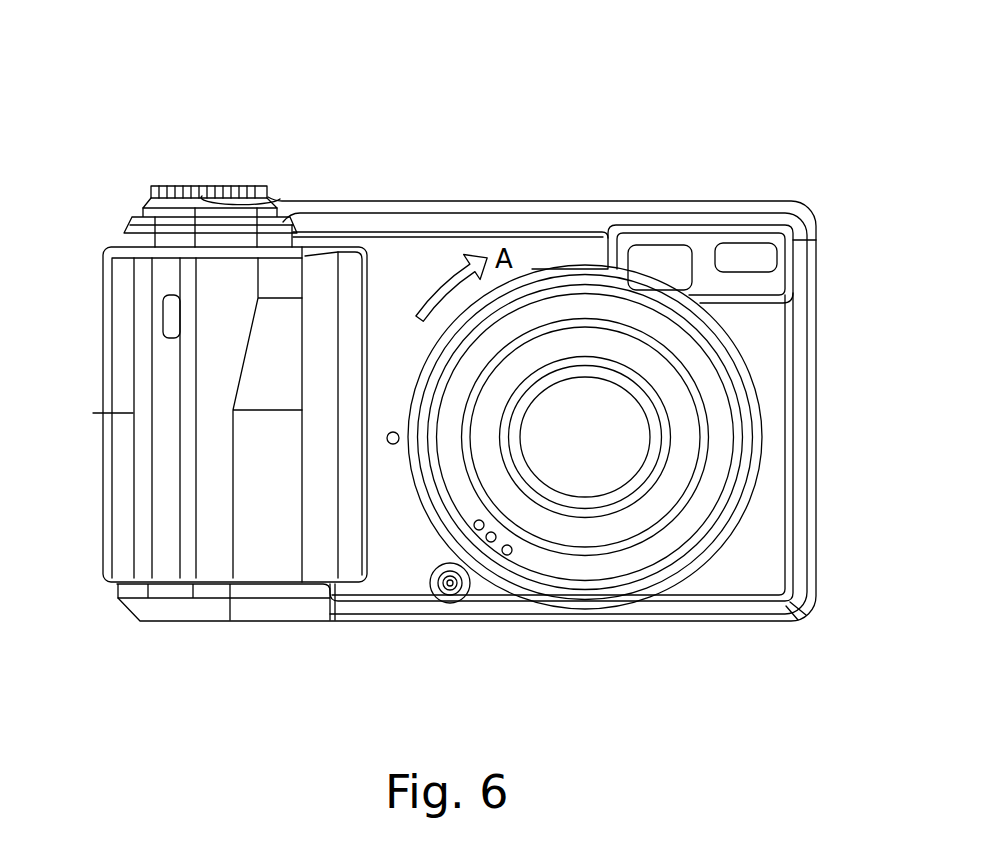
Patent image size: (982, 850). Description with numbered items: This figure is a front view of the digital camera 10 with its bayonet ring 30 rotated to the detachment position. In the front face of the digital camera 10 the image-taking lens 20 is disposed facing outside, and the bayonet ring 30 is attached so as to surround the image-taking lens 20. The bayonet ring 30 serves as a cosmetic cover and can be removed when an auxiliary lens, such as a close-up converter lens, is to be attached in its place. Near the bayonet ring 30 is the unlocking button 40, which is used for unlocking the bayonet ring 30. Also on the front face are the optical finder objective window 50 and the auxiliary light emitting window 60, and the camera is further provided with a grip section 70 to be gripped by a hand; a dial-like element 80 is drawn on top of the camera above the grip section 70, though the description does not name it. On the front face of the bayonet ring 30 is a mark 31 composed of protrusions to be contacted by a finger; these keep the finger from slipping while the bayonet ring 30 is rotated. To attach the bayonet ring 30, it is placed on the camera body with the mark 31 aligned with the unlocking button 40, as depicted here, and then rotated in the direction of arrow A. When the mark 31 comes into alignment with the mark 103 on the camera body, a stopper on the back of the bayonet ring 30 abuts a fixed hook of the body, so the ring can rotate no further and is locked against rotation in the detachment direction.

The digital camera 10 is at (606, 106).
The image-taking lens 20 is at (598, 458).
The bayonet ring 30 is at (712, 388).
The mark 31 is at (473, 542).
The unlocking button 40 is at (450, 600).
The optical finder objective window 50 is at (662, 256).
The auxiliary light emitting window 60 is at (746, 256).
The grip section 70 is at (211, 455).
The mode dial 80 is at (158, 185).
The mark 103 is at (393, 430).